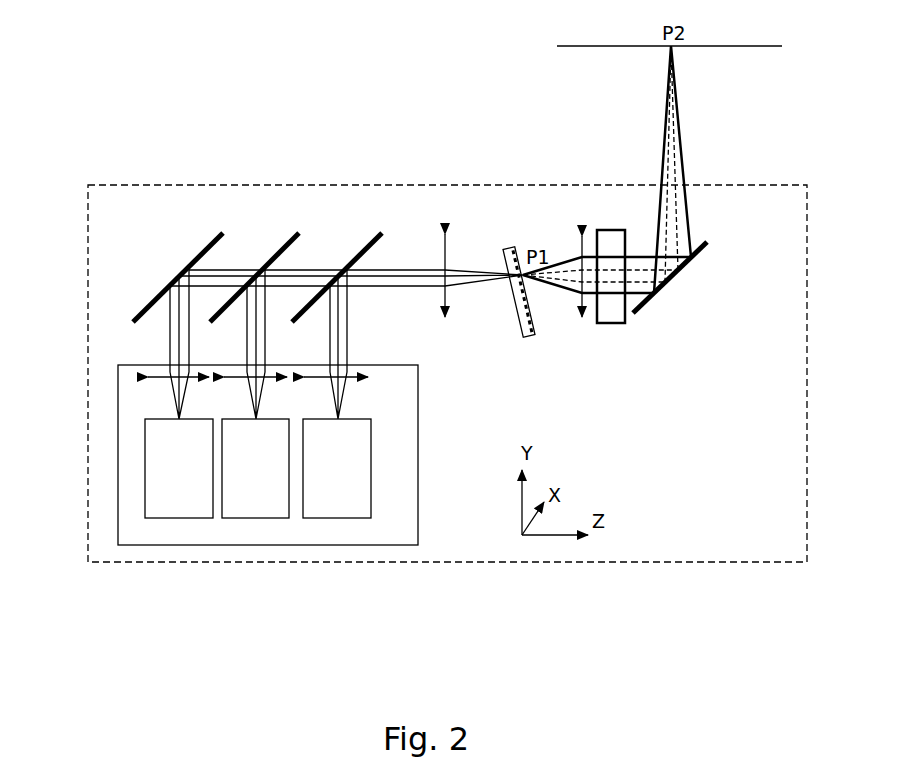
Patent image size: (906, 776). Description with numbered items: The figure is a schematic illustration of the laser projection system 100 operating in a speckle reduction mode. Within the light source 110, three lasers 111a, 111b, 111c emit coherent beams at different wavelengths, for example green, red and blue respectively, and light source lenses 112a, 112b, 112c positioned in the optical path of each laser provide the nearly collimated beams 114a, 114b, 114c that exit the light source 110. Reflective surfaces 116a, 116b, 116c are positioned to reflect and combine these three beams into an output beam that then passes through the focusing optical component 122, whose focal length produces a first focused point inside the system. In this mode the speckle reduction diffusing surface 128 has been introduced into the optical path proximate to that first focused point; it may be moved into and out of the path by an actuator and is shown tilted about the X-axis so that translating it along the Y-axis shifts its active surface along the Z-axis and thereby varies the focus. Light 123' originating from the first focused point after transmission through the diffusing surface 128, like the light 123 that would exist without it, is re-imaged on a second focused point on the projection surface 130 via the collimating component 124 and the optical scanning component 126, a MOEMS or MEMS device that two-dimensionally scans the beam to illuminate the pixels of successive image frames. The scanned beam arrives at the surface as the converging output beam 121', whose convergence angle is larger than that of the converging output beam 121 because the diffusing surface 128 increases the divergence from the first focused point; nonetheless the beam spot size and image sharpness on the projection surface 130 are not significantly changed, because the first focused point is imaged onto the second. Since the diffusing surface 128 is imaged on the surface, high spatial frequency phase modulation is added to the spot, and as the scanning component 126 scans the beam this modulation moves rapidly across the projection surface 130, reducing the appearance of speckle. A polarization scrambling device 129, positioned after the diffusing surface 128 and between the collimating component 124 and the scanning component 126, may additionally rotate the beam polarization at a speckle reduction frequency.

The laser projection system 100 is at (120, 150).
The light source 110 is at (104, 485).
The first laser 111a is at (175, 519).
The second laser 111b is at (257, 519).
The third laser 111c is at (340, 519).
The light source lens 112a is at (147, 375).
The light source lens 112b is at (228, 375).
The light source lens 112c is at (312, 375).
The beam 114a is at (167, 380).
The beam 114b is at (245, 380).
The beam 114c is at (325, 380).
The reflective surface 116a is at (200, 248).
The reflective surface 116b is at (287, 240).
The reflective surface 116c is at (373, 240).
The focusing optical component 122 is at (446, 319).
The speckle reduction diffusing surface 128 is at (531, 338).
The light 123' is at (603, 248).
The light 123 is at (615, 320).
The collimating component 124 is at (583, 319).
The polarization scrambling device 129 is at (620, 228).
The optical scanning component 126 is at (709, 250).
The converging output beam 121' is at (641, 169).
The converging output beam 121 is at (715, 164).
The projection surface 130 is at (760, 47).